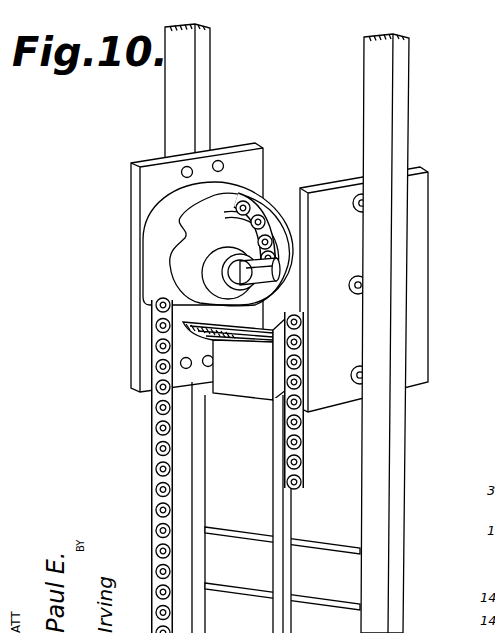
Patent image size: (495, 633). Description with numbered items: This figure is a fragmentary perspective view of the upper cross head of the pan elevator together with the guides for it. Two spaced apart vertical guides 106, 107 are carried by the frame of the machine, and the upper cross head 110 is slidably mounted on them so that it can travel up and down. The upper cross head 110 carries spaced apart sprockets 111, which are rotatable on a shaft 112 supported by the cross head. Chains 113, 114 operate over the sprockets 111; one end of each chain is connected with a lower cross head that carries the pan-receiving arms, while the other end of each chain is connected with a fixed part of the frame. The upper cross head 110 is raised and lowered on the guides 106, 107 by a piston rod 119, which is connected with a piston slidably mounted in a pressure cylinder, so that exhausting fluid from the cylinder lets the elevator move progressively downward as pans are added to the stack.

The vertical guide 106 is at (203, 94).
The vertical guide 107 is at (373, 90).
The upper cross head 110 is at (428, 200).
The sprocket 111 is at (232, 215).
The shaft 112 is at (266, 271).
The chain 113 is at (153, 443).
The chain 114 is at (303, 445).
The piston rod 119 is at (283, 535).